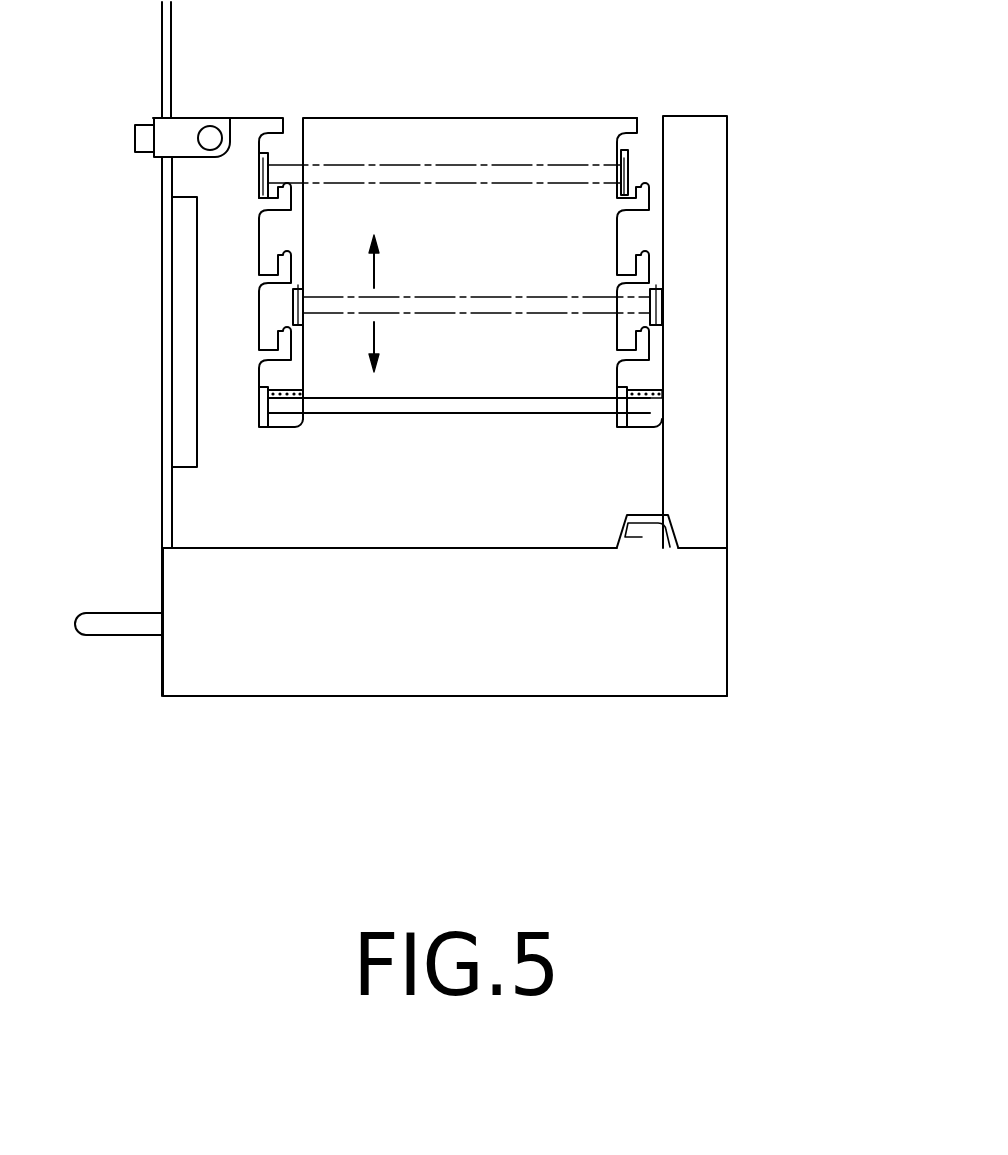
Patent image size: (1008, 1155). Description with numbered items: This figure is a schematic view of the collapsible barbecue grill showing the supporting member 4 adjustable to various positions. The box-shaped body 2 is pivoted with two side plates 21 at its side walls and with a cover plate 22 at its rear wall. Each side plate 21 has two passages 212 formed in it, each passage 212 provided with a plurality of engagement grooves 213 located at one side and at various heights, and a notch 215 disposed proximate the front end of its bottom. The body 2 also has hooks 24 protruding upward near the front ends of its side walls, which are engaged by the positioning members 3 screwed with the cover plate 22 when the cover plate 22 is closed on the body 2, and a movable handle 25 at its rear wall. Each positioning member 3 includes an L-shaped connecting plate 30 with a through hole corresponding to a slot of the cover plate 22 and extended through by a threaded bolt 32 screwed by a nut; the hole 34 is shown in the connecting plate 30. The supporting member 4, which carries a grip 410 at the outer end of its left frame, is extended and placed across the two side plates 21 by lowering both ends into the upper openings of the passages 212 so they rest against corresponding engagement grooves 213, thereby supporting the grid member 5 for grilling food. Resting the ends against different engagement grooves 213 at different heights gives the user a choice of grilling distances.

The body 2 is at (702, 600).
The side plate 21 is at (698, 450).
The cover plate 22 is at (167, 38).
The passage 212 is at (648, 133).
The engagement groove 213 is at (633, 248).
The notch 215 is at (673, 528).
The hook 24 is at (648, 540).
The movable handle 25 is at (100, 623).
The positioning member 3 is at (194, 107).
The L-shaped connecting plate 30 is at (185, 128).
The threaded bolt 32 is at (138, 137).
The pivot hole 34 is at (210, 138).
The supporting member 4 is at (660, 410).
The grip 410 is at (563, 407).
The grid member 5 is at (643, 383).